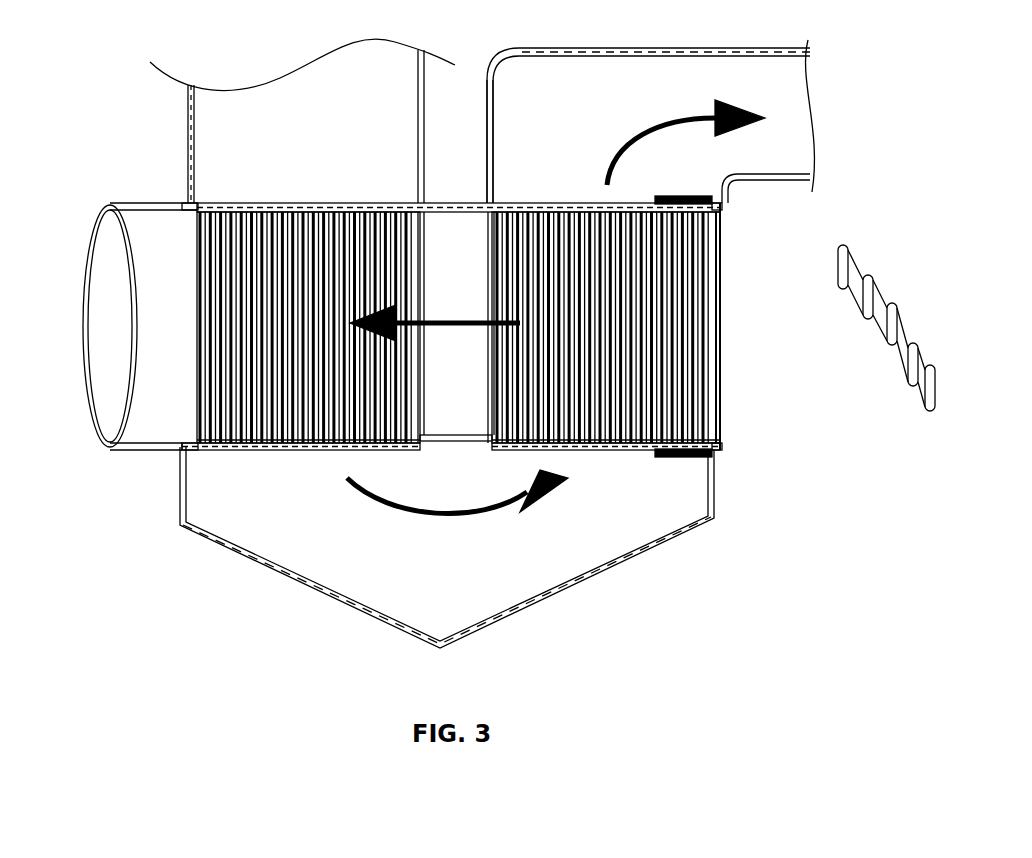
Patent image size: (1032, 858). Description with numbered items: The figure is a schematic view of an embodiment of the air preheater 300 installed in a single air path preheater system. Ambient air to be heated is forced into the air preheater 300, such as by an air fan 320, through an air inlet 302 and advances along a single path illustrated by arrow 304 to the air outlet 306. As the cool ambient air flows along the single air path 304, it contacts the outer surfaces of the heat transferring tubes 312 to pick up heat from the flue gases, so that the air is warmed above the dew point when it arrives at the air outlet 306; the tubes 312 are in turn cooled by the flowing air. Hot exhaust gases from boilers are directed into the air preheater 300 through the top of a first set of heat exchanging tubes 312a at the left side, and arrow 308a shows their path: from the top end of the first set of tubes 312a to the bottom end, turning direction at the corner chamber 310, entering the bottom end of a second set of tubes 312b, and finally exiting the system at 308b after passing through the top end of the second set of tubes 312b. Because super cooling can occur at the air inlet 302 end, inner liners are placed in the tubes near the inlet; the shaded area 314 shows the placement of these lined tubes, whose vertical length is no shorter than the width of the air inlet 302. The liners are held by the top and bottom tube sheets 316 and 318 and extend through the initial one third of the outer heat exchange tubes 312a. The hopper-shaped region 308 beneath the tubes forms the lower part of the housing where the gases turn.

The air preheater 300 is at (108, 142).
The air inlet 302 is at (720, 312).
The single air path 304 is at (447, 317).
The air outlet 306 is at (110, 330).
The collection hopper 308 is at (440, 525).
The hot gas path 308a is at (273, 170).
The gas exit 308b is at (650, 120).
The corner chamber 310 is at (460, 613).
The heat transferring tubes 312 is at (333, 450).
The first set of heat exchanging tubes 312a is at (337, 205).
The second set of tubes 312b is at (553, 205).
The shaded area 314 is at (710, 416).
The top tube sheet 316 is at (182, 205).
The bottom tube sheet 318 is at (192, 455).
The air fan 320 is at (900, 365).